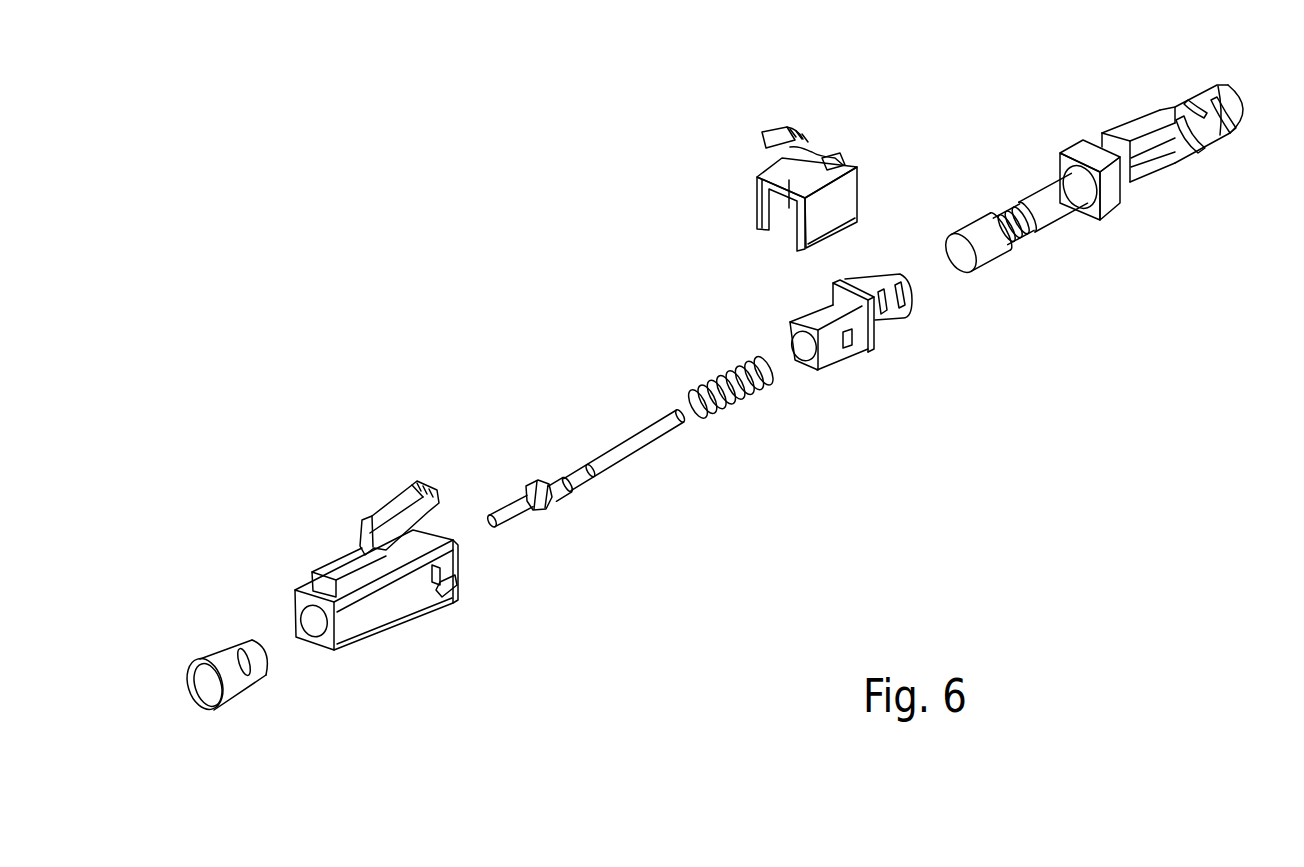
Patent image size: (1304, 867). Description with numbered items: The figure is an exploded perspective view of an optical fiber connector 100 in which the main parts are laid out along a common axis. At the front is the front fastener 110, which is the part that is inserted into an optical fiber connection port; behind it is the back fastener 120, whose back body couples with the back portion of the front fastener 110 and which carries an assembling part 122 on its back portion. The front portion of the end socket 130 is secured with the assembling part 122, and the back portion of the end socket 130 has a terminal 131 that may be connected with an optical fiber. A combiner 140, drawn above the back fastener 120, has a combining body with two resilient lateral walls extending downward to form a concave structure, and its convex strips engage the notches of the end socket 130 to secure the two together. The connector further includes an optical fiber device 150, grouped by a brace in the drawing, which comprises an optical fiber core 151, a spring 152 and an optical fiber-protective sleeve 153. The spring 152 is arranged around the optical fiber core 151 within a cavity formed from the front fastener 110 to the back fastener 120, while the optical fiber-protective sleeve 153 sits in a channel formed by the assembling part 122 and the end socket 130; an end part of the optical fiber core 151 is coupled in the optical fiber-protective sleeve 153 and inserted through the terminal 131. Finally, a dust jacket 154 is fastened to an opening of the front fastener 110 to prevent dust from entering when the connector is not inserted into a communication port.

The optical fiber connector 100 is at (447, 189).
The front fastener 110 is at (368, 515).
The back fastener 120 is at (897, 259).
The assembling part 122 is at (907, 303).
The end socket 130 is at (1161, 160).
The terminal 131 is at (1233, 127).
The combiner 140 is at (817, 132).
The optical fiber device 150 is at (335, 779).
The optical fiber core 151 is at (580, 472).
The spring 152 is at (740, 392).
The optical fiber-protective sleeve 153 is at (1050, 213).
The dust jacket 154 is at (240, 670).